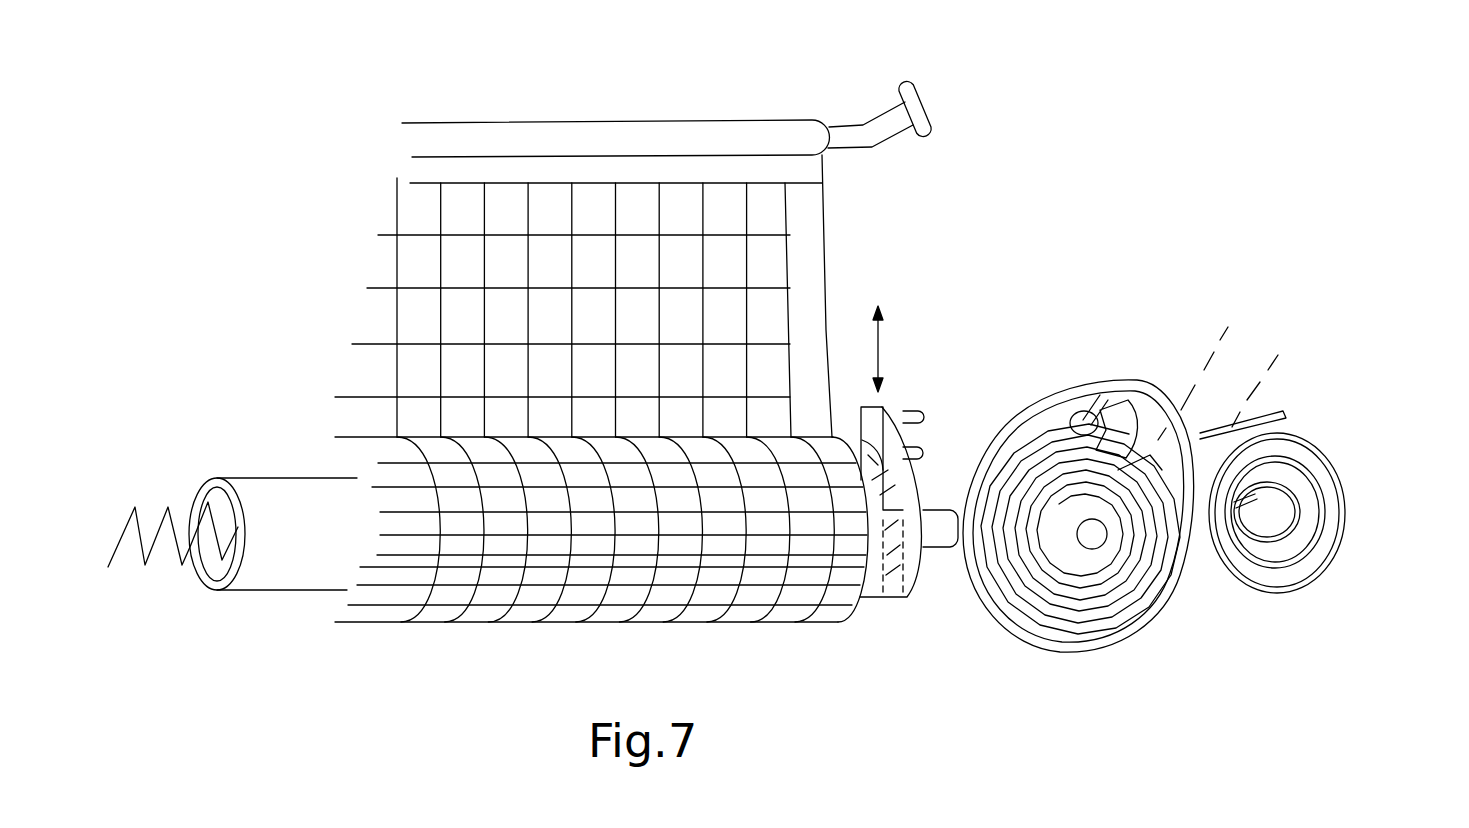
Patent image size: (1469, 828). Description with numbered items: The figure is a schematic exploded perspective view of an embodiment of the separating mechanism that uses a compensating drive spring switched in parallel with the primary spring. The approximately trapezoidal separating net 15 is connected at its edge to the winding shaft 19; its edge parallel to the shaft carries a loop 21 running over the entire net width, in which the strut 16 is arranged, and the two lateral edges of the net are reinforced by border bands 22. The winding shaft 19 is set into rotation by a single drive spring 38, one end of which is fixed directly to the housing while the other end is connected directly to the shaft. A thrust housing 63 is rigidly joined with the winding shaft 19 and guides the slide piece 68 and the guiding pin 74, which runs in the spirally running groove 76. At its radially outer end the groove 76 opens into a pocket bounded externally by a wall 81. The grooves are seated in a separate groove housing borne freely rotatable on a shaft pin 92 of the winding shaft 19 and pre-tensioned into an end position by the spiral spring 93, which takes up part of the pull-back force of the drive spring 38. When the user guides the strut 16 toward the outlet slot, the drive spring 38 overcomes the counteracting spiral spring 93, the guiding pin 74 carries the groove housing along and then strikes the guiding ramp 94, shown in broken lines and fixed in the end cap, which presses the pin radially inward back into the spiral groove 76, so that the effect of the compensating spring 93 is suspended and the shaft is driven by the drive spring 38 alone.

The separating net 15 is at (757, 300).
The strut 16 is at (838, 130).
The winding shaft 19 is at (267, 477).
The loop 21 is at (503, 142).
The border bands 22 is at (914, 103).
The drive spring 38 is at (145, 567).
The thrust housing 63 is at (868, 600).
The slide piece 68 is at (882, 406).
The guiding pin 74 is at (922, 411).
The spiral groove 76 is at (1082, 608).
The wall 81 is at (1115, 370).
The shaft pin 92 is at (940, 507).
The spiral spring 93 is at (1345, 460).
The guiding ramp 94 is at (1203, 433).